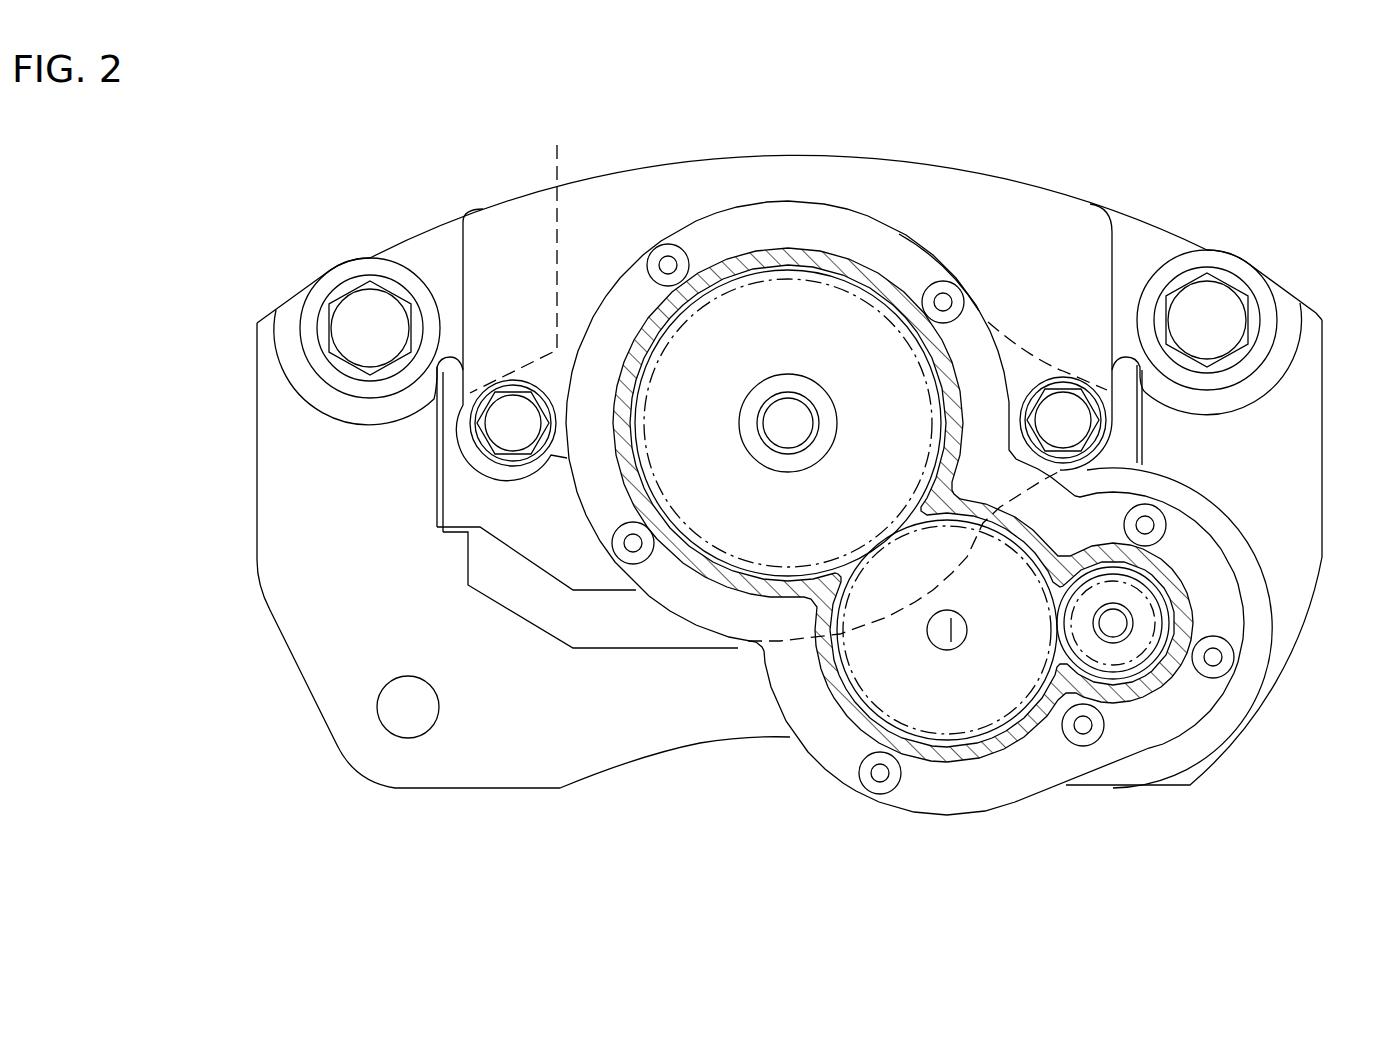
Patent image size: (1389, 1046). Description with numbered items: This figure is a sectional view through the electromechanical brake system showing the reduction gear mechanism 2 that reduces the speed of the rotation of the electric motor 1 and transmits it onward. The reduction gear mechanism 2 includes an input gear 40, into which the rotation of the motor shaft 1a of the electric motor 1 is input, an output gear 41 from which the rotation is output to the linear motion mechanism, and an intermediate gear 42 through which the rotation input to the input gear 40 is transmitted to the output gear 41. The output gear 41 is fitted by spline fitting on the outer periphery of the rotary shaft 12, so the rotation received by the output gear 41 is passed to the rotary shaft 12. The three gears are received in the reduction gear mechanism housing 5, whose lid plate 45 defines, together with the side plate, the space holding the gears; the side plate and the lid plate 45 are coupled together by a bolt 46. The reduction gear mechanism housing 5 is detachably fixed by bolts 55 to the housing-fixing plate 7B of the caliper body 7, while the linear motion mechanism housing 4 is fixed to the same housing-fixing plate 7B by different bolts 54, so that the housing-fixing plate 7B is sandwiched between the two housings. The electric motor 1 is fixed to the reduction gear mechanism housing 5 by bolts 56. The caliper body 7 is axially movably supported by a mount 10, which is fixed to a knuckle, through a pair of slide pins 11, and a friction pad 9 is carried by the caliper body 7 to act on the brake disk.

The electric motor 1 is at (1243, 693).
The motor shaft 1a is at (1120, 630).
The reduction gear mechanism 2 is at (850, 700).
The linear motion mechanism housing 4 is at (511, 296).
The reduction gear mechanism housing 5 is at (939, 388).
The caliper body 7 is at (884, 162).
The housing-fixing plate 7B is at (550, 473).
The friction pad 9 is at (450, 477).
The mount 10 is at (697, 730).
The slide pins 11 is at (360, 310).
The rotary shaft 12 is at (788, 279).
The input gear 40 is at (1121, 708).
The output gear 41 is at (750, 297).
The intermediate gear 42 is at (950, 723).
The lid plate 45 is at (951, 206).
The bolt 46 is at (878, 795).
The bolts 54 is at (513, 403).
The bolts 55 is at (662, 247).
The bolts 56 is at (1165, 522).